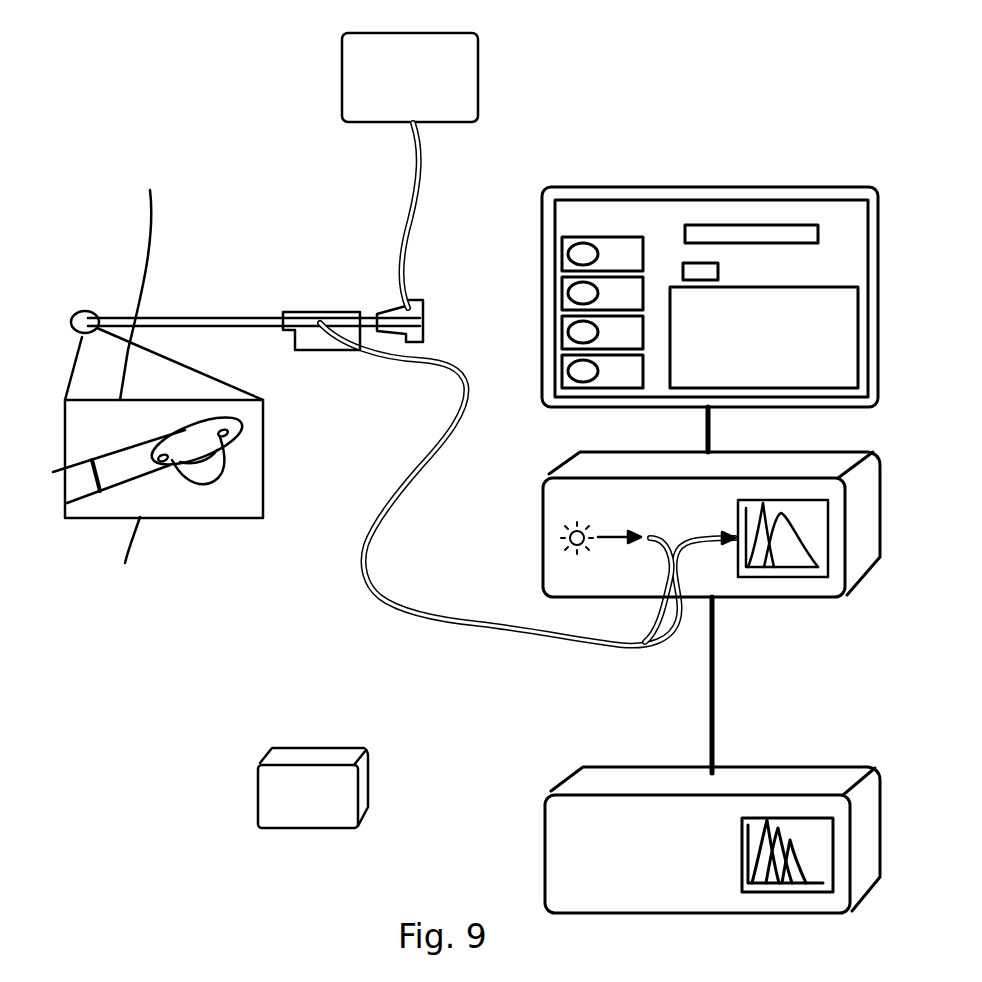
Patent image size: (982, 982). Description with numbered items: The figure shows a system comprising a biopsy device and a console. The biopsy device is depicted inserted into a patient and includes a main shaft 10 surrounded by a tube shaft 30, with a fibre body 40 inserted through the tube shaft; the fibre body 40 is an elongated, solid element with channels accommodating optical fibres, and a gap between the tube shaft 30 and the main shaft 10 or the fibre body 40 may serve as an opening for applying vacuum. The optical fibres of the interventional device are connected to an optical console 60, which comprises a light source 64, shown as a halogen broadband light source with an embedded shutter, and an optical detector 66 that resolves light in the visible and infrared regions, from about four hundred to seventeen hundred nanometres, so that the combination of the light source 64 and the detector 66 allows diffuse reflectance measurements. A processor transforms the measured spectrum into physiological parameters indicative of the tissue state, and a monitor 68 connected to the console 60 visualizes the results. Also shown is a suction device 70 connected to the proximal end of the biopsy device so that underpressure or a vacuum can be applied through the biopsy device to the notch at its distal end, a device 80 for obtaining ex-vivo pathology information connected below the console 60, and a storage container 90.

The main shaft 10 is at (133, 467).
The tube shaft 30 is at (200, 443).
The fibre body 40 is at (402, 497).
The optical console 60 is at (661, 557).
The light source 64 is at (563, 538).
The optical detector 66 is at (790, 577).
The monitor 68 is at (540, 305).
The suction device 70 is at (362, 78).
The device for obtaining ex-vivo pathology information 80 is at (603, 782).
The storage container 90 is at (332, 755).